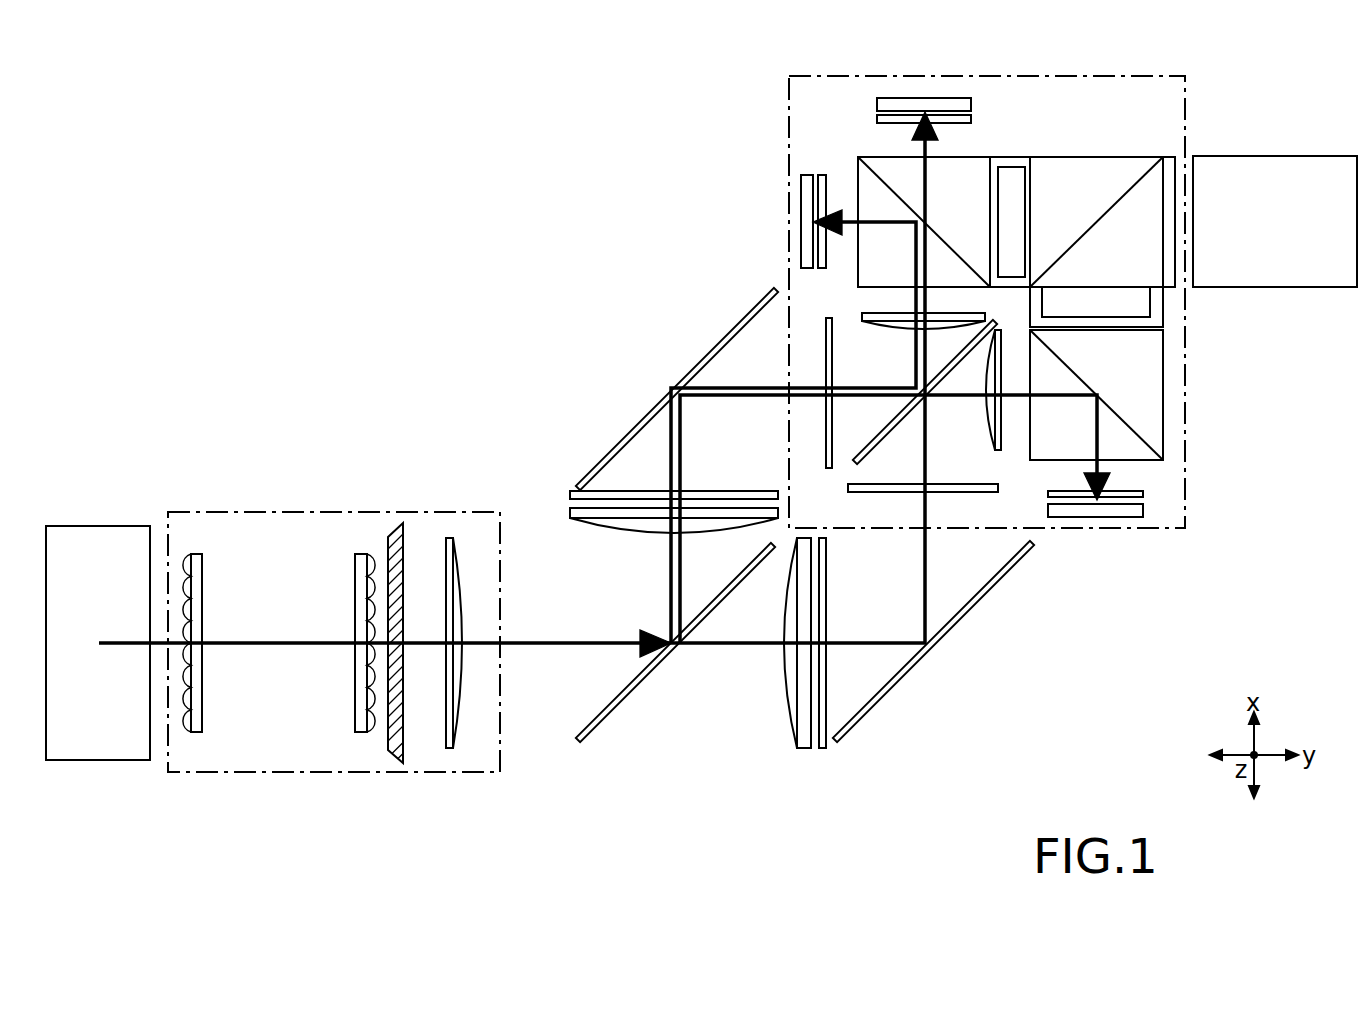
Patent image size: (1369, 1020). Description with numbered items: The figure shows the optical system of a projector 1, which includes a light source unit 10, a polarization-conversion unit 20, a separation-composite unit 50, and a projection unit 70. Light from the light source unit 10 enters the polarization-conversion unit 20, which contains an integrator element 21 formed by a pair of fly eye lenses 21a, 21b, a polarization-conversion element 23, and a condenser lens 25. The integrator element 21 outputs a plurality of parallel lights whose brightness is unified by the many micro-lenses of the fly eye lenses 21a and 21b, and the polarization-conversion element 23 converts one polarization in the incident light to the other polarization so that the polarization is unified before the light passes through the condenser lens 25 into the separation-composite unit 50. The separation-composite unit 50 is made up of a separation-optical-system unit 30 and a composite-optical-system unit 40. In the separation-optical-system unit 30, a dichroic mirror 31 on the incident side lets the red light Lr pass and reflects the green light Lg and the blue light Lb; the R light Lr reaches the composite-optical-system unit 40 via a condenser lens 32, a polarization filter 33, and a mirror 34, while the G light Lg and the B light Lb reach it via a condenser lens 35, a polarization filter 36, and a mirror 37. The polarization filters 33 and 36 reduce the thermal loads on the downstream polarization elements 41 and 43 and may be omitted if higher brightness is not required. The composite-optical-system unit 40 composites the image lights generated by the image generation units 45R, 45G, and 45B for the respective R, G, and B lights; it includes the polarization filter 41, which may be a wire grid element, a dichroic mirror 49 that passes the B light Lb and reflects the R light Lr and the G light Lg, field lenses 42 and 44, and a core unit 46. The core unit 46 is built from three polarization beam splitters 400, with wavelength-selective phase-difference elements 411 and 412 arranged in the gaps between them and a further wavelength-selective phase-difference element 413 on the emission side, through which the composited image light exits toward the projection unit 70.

The projector 1 is at (447, 172).
The light source unit 10 is at (96, 526).
The polarization-conversion unit 20 is at (338, 512).
The integrator element 21 is at (279, 716).
The fly eye lens 21a is at (197, 733).
The fly eye lens 21b is at (337, 692).
The polarization-conversion element 23 is at (392, 764).
The condenser lens 25 is at (446, 750).
The separation-optical-system unit 30 is at (684, 322).
The dichroic mirror 31 is at (617, 705).
The condenser lens 32 is at (803, 752).
The polarization filter 33 is at (823, 752).
The mirror 34 is at (873, 707).
The condenser lens 35 is at (568, 513).
The polarization filter 36 is at (570, 494).
The mirror 37 is at (612, 440).
The composite-optical-system unit 40 is at (787, 209).
The polarization filter 41 is at (950, 493).
The field lens 42 is at (862, 317).
The polarization element 43 is at (826, 432).
The field lens 44 is at (1003, 444).
The image generation unit 45R is at (931, 86).
The image generation unit 45G is at (1115, 527).
The image generation unit 45B is at (805, 166).
The core unit 46 is at (1044, 232).
The dichroic mirror 49 is at (856, 464).
The separation-composite unit 50 is at (627, 173).
The projection unit 70 is at (1278, 156).
The polarization beam splitter 400 is at (877, 160).
The wavelength-selective phase-difference element 411 is at (1013, 178).
The wavelength-selective phase-difference element 412 is at (1150, 303).
The wavelength-selective phase-difference element 413 is at (1168, 158).
The R light Lr is at (743, 646).
The G light Lg is at (669, 593).
The B light Lb is at (683, 575).